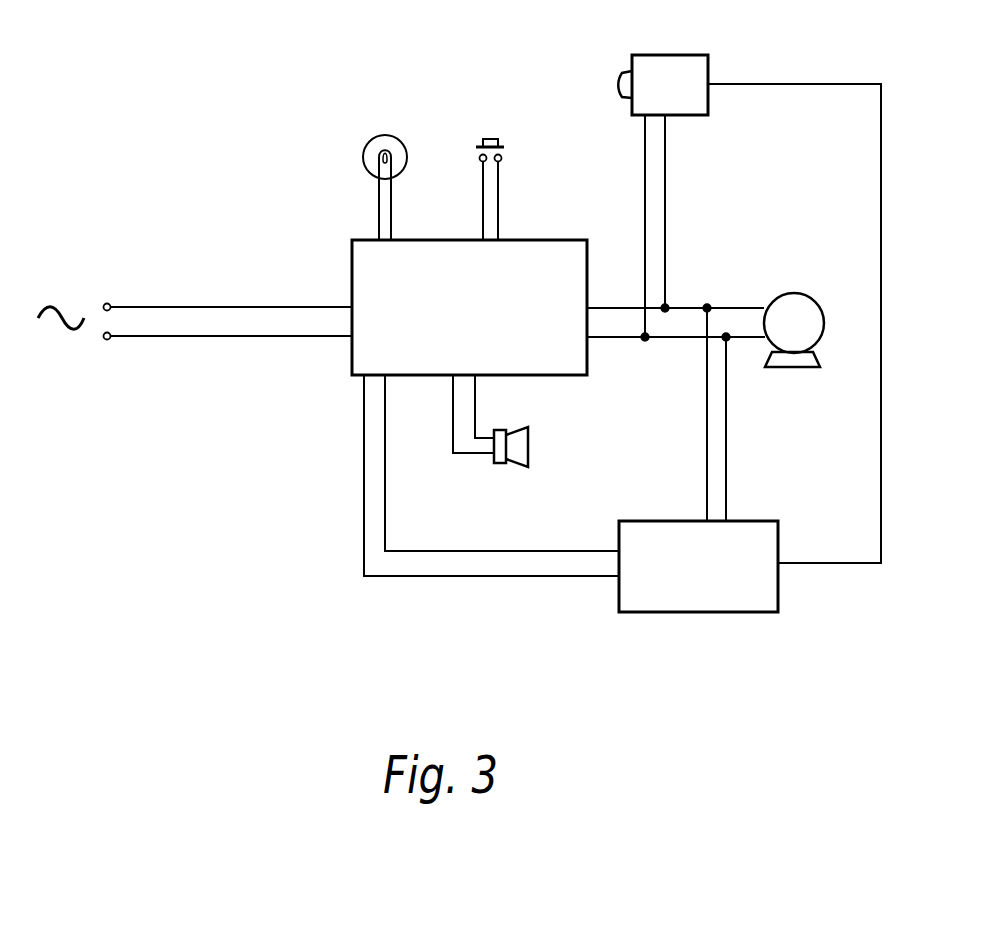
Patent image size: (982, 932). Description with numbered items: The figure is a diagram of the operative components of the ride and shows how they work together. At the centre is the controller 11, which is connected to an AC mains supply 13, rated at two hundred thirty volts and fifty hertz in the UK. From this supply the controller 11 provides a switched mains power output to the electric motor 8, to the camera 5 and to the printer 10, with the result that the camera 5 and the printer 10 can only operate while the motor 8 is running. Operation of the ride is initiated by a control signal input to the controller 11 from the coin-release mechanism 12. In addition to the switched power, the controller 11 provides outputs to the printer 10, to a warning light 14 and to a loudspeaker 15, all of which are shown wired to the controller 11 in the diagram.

The camera 5 is at (679, 68).
The electric motor 8 is at (800, 305).
The printer 10 is at (750, 537).
The controller 11 is at (542, 268).
The coin-release mechanism 12 is at (487, 136).
The AC mains supply 13 is at (66, 298).
The warning light 14 is at (368, 157).
The loudspeaker 15 is at (531, 444).